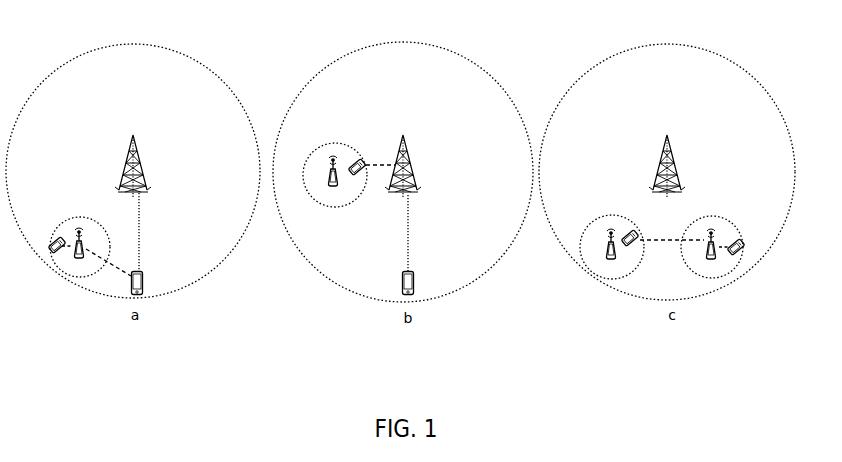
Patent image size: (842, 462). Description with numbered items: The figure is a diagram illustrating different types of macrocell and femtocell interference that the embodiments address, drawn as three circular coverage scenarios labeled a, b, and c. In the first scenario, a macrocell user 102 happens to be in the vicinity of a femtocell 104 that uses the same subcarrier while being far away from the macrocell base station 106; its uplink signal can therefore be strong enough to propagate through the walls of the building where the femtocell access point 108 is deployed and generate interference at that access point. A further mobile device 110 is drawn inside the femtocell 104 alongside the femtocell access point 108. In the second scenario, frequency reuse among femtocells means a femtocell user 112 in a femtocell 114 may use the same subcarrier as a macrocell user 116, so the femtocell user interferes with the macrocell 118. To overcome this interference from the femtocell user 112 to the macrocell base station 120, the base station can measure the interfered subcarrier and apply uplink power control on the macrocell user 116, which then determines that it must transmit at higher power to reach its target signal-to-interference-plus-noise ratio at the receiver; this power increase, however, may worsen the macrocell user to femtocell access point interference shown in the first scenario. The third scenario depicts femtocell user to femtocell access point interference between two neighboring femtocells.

The macrocell user 102 is at (145, 292).
The femtocell 104 is at (69, 269).
The macrocell base station 106 is at (139, 156).
The femtocell access point 108 is at (79, 253).
The mobile device 110 is at (54, 240).
The femtocell user 112 is at (361, 161).
The femtocell 114 is at (332, 143).
The macrocell user 116 is at (415, 292).
The macrocell 118 is at (436, 48).
The macrocell base station 120 is at (411, 172).